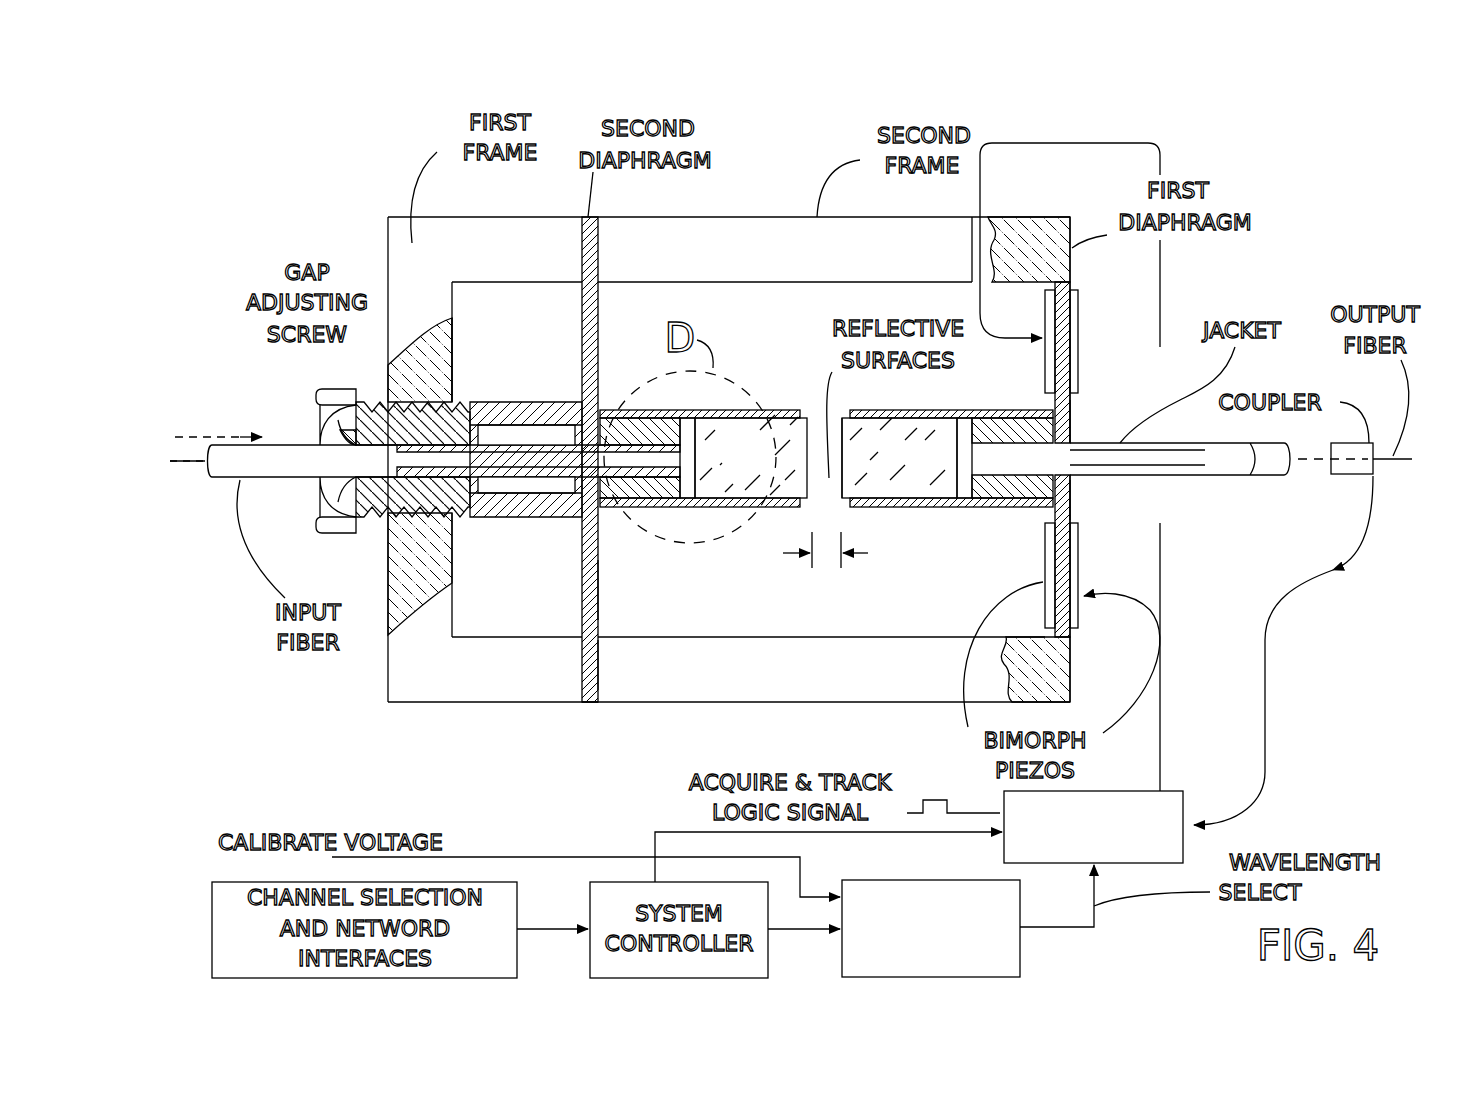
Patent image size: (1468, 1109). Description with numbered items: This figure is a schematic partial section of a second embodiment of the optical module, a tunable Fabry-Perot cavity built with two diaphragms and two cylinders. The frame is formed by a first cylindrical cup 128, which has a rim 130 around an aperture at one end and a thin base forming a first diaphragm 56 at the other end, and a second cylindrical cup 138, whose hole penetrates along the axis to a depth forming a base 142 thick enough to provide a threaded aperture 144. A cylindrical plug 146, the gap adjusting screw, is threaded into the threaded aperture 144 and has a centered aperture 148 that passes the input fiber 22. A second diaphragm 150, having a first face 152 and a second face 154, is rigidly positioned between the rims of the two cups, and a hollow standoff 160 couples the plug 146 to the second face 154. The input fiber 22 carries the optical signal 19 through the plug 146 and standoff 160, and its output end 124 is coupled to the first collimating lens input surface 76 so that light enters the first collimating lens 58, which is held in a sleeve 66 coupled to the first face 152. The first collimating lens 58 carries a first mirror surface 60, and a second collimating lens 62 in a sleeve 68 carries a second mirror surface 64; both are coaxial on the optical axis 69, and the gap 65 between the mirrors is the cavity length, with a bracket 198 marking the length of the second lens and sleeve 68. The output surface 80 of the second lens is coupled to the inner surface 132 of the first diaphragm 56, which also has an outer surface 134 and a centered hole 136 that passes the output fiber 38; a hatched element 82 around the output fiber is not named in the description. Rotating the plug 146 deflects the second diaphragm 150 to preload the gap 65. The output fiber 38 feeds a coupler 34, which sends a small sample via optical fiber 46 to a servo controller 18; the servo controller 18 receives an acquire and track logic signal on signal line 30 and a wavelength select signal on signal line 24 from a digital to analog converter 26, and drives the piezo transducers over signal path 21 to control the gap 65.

The servo controller 18 is at (1165, 791).
The optical signal 19 is at (236, 435).
The signal path 21 is at (1062, 143).
The input fiber 22 is at (298, 445).
The signal line 24 is at (1060, 927).
The digital to analog converter 26 is at (930, 880).
The signal line 30 is at (658, 832).
The coupler 34 is at (1331, 450).
The output fiber 38 is at (1228, 443).
The optical fiber 46 is at (1265, 680).
The first diaphragm 56 is at (1060, 287).
The first collimating lens 58 is at (727, 460).
The first mirror surface 60 is at (813, 478).
The second collimating lens 62 is at (872, 475).
The second mirror surface 64 is at (830, 425).
The gap 65 is at (808, 550).
The sleeve 66 is at (722, 410).
The sleeve 68 is at (1000, 410).
The optical axis 69 is at (1322, 463).
The first collimating lens input surface 76 is at (759, 318).
The second collimating lens output surface 80 is at (960, 460).
The output fiber sleeve 82 is at (1012, 458).
The output end 124 is at (710, 355).
The first cylindrical cup 128 is at (903, 254).
The rim 130 is at (598, 665).
The inner surface 132 is at (1052, 403).
The outer surface 134 is at (1072, 507).
The centered hole 136 is at (1072, 432).
The second cylindrical cup 138 is at (428, 681).
The base 142 is at (452, 347).
The threaded aperture 144 is at (430, 513).
The cylindrical plug 146 is at (352, 392).
The centered aperture 148 is at (345, 470).
The second diaphragm 150 is at (596, 695).
The first face 152 is at (598, 592).
The second face 154 is at (582, 600).
The standoff 160 is at (488, 402).
The bracket 198 is at (941, 472).